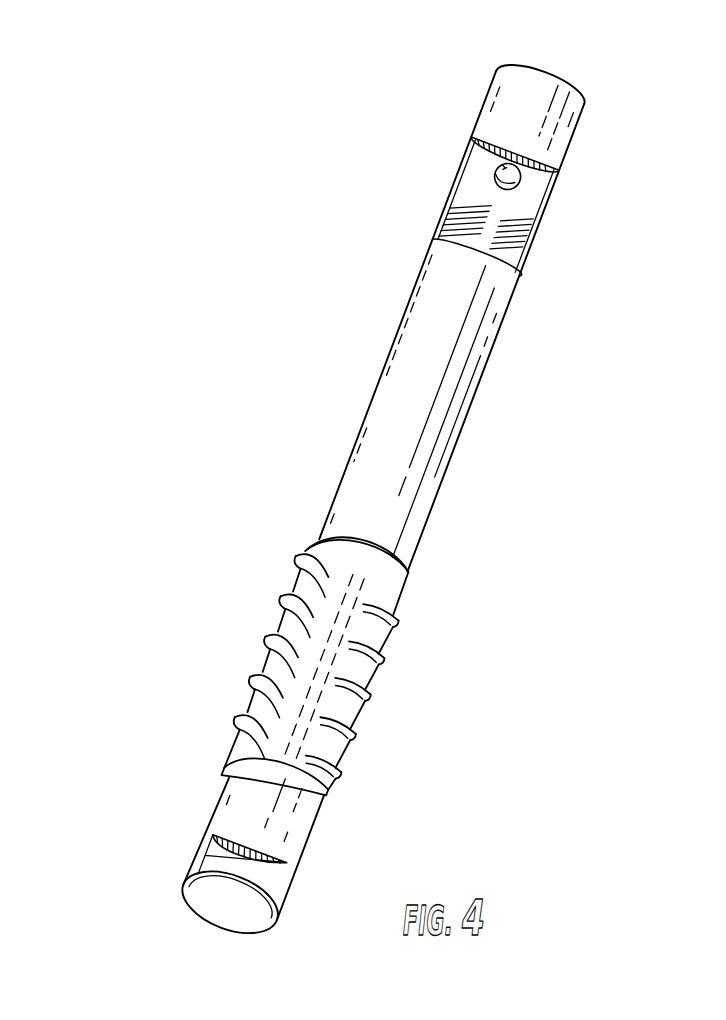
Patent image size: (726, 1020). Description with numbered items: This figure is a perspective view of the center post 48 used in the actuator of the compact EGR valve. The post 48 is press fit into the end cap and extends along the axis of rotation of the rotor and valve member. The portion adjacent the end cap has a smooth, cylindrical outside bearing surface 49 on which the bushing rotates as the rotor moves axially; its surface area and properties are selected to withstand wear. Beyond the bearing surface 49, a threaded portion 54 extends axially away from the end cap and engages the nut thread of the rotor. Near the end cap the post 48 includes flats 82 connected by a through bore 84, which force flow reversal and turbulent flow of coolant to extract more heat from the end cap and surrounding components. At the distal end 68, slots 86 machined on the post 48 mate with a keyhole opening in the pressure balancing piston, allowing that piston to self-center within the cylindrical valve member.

The post 48 is at (413, 277).
The bearing surface 49 is at (445, 443).
The threaded portion 54 is at (370, 708).
The distal end 68 is at (197, 897).
The flats 82 is at (538, 183).
The through bore 84 is at (496, 171).
The slots 86 is at (287, 868).